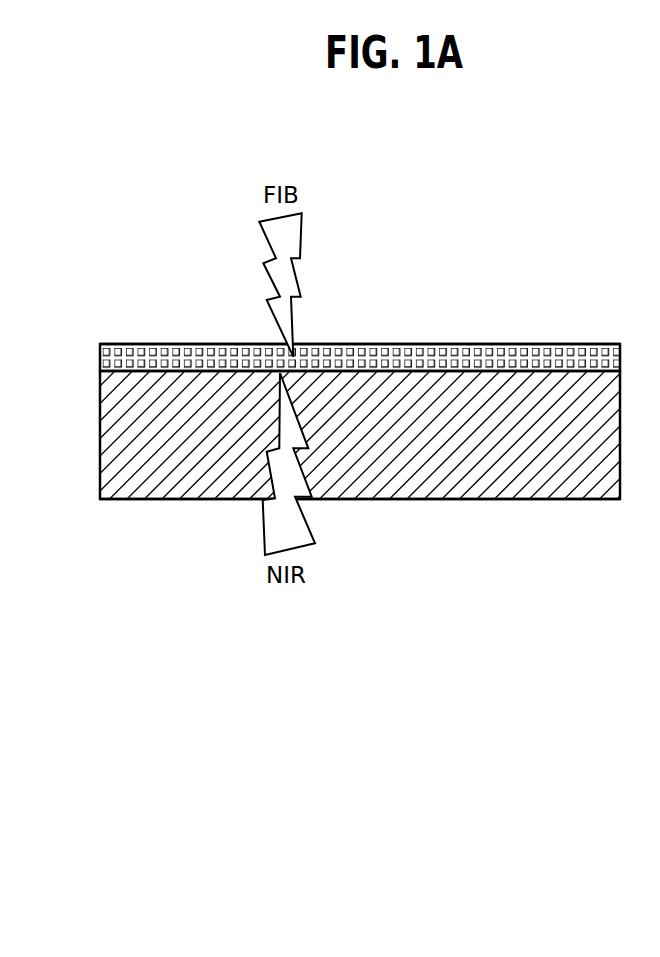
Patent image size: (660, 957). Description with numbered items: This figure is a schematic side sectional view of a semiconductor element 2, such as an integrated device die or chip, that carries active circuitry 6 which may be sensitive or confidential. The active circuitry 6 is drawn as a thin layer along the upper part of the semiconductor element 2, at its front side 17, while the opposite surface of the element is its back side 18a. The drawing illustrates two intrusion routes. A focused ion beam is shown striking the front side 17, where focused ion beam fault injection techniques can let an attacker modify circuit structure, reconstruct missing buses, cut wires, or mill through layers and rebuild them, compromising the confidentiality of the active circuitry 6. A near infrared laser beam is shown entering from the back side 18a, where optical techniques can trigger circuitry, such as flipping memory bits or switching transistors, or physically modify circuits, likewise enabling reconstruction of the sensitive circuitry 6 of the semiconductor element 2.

The semiconductor element 2 is at (477, 475).
The active circuitry 6 is at (173, 363).
The front side 17 is at (475, 338).
The bottom surface 18a is at (423, 500).